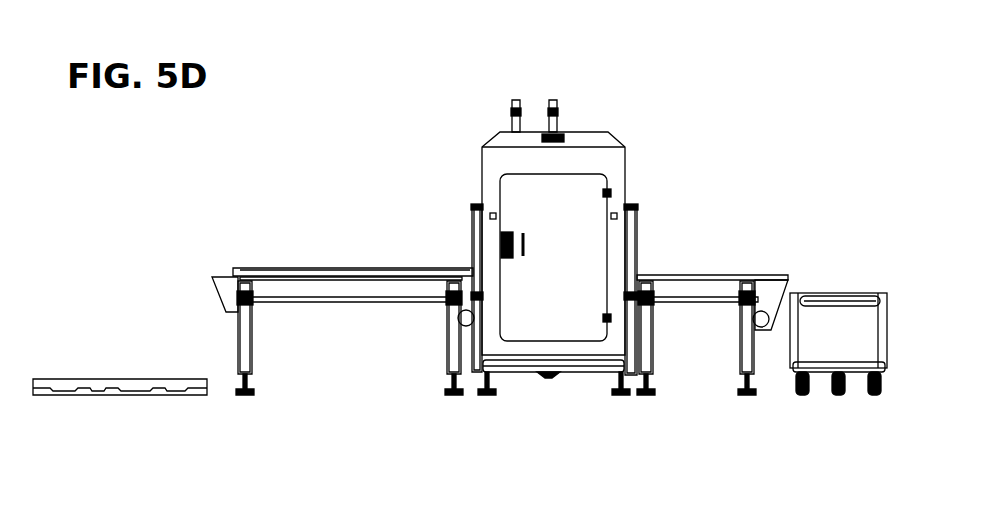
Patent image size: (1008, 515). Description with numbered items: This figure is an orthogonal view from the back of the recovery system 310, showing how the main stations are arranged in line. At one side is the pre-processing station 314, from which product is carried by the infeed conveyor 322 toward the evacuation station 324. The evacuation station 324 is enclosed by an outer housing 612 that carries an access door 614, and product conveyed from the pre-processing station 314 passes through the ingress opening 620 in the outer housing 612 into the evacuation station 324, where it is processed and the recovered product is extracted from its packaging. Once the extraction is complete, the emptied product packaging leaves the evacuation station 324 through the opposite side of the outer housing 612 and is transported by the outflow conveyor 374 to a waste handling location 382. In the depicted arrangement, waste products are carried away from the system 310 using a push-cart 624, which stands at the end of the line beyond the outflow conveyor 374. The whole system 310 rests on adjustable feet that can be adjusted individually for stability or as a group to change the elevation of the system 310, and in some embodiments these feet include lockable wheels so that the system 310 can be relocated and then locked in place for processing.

The system 310 is at (778, 153).
The pre-processing station 314 is at (156, 233).
The infeed conveyor 322 is at (292, 262).
The evacuation station 324 is at (526, 76).
The outflow conveyor 374 is at (692, 270).
The waste handling location 382 is at (811, 259).
The outer housing 612 is at (602, 150).
The access door 614 is at (516, 199).
The ingress opening 620 is at (466, 240).
The push-cart 624 is at (796, 381).